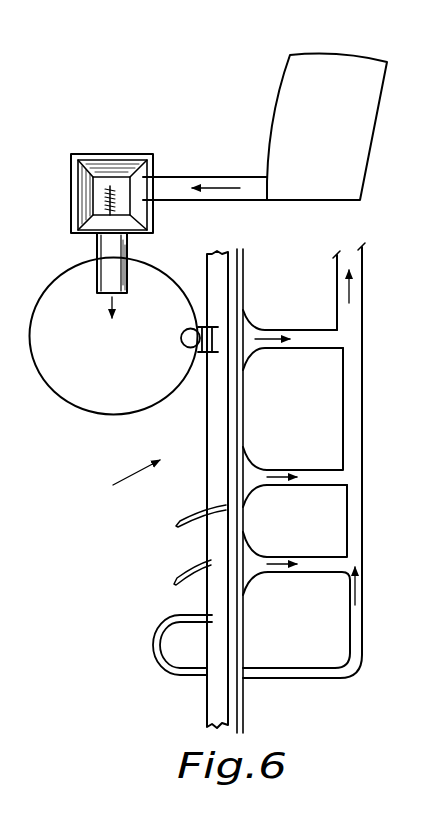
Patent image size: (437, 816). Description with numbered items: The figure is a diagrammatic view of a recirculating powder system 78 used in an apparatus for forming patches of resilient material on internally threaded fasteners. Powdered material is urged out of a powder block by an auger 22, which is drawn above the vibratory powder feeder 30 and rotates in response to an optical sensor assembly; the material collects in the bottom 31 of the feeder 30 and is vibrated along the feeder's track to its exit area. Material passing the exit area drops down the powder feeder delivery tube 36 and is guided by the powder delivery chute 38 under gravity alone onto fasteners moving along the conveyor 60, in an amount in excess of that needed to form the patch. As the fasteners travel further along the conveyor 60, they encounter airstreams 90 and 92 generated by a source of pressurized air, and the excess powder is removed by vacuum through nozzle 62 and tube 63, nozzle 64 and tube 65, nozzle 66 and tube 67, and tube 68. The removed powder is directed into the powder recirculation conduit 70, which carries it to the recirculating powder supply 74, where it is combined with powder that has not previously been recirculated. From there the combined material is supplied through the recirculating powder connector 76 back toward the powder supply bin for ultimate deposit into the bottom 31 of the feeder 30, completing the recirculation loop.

The auger 22 is at (103, 195).
The vibratory powder feeder 30 is at (50, 391).
The bottom of the feeder 31 is at (94, 351).
The powder feeder delivery tube 36 is at (181, 340).
The powder delivery chute 38 is at (202, 357).
The conveyor 60 is at (218, 257).
The nozzle 62 is at (250, 317).
The tube 63 is at (320, 352).
The nozzle 64 is at (255, 450).
The tube 65 is at (327, 487).
The nozzle 66 is at (258, 538).
The tube 67 is at (322, 578).
The tube 68 is at (168, 618).
The powder recirculation conduit 70 is at (358, 366).
The recirculating powder supply 74 is at (278, 92).
The recirculating powder connector 76 is at (232, 175).
The recirculating powder system 78 is at (122, 481).
The airstream 90 is at (190, 518).
The airstream 92 is at (180, 576).